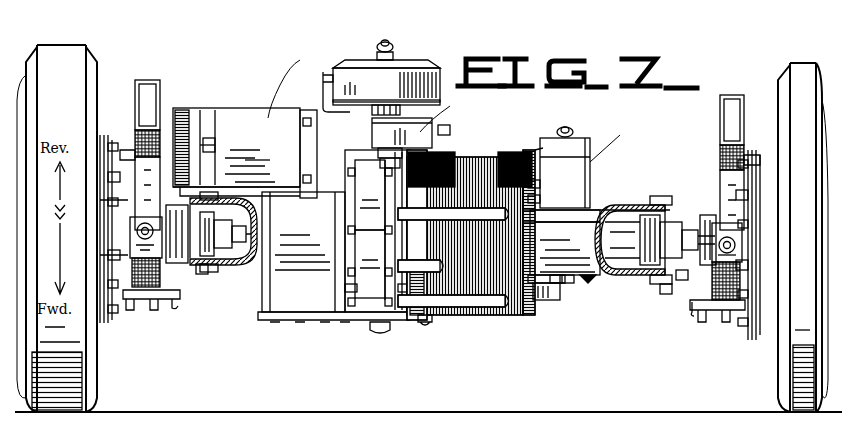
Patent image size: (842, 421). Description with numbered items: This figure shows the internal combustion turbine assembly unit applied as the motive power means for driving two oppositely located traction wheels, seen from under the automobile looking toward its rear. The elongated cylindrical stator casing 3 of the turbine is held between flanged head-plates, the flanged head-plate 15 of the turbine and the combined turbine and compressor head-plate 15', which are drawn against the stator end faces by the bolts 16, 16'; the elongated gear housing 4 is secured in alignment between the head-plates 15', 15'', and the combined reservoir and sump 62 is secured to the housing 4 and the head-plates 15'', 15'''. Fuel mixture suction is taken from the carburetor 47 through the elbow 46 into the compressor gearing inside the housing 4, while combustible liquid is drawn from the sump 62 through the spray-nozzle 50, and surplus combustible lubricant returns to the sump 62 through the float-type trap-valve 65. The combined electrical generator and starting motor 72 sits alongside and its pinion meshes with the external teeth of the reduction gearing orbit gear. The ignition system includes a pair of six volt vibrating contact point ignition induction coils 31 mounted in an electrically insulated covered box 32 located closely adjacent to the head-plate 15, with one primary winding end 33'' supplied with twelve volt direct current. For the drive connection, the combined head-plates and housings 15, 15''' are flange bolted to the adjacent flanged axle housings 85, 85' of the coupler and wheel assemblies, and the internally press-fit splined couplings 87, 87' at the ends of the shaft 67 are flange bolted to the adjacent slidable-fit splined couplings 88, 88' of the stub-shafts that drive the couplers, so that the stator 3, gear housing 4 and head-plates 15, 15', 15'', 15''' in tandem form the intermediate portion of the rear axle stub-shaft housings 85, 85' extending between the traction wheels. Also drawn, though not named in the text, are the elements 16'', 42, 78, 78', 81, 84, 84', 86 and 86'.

The stator casing 3 is at (467, 320).
The gear housing 4 is at (360, 220).
The flanged head-plate 15 is at (596, 229).
The combined turbine and compressor head-plate 15' is at (394, 230).
The head-plate 15'' is at (303, 252).
The head-plate 15''' is at (282, 153).
The bolt 16 is at (546, 306).
The bolt 16' is at (390, 292).
The bracket 16'' is at (332, 292).
The ignition induction coil 31 is at (560, 172).
The covered box 32 is at (590, 168).
The primary winding end 33'' is at (535, 133).
The cooling jacket 42 is at (510, 322).
The elbow 46 is at (390, 168).
The carburetor 47 is at (380, 142).
The spray-nozzle 50 is at (380, 332).
The combined reservoir and sump 62 is at (318, 320).
The float-type trap-valve 65 is at (425, 322).
The shaft 67 is at (255, 232).
The combined electrical generator and starting motor 72 is at (230, 118).
The lever 78 is at (575, 307).
The lever 78' is at (572, 298).
The shifter 81 is at (588, 280).
The exhaust port 84 is at (511, 161).
The exhaust port 84' is at (440, 161).
The flanged axle housing 85 is at (699, 217).
The flanged axle housing 85' is at (151, 252).
The bearing 86 is at (651, 304).
The bearing 86' is at (207, 288).
The splined coupling 87 is at (655, 227).
The splined coupling 87' is at (230, 241).
The splined coupling 88 is at (675, 292).
The splined coupling 88' is at (178, 248).